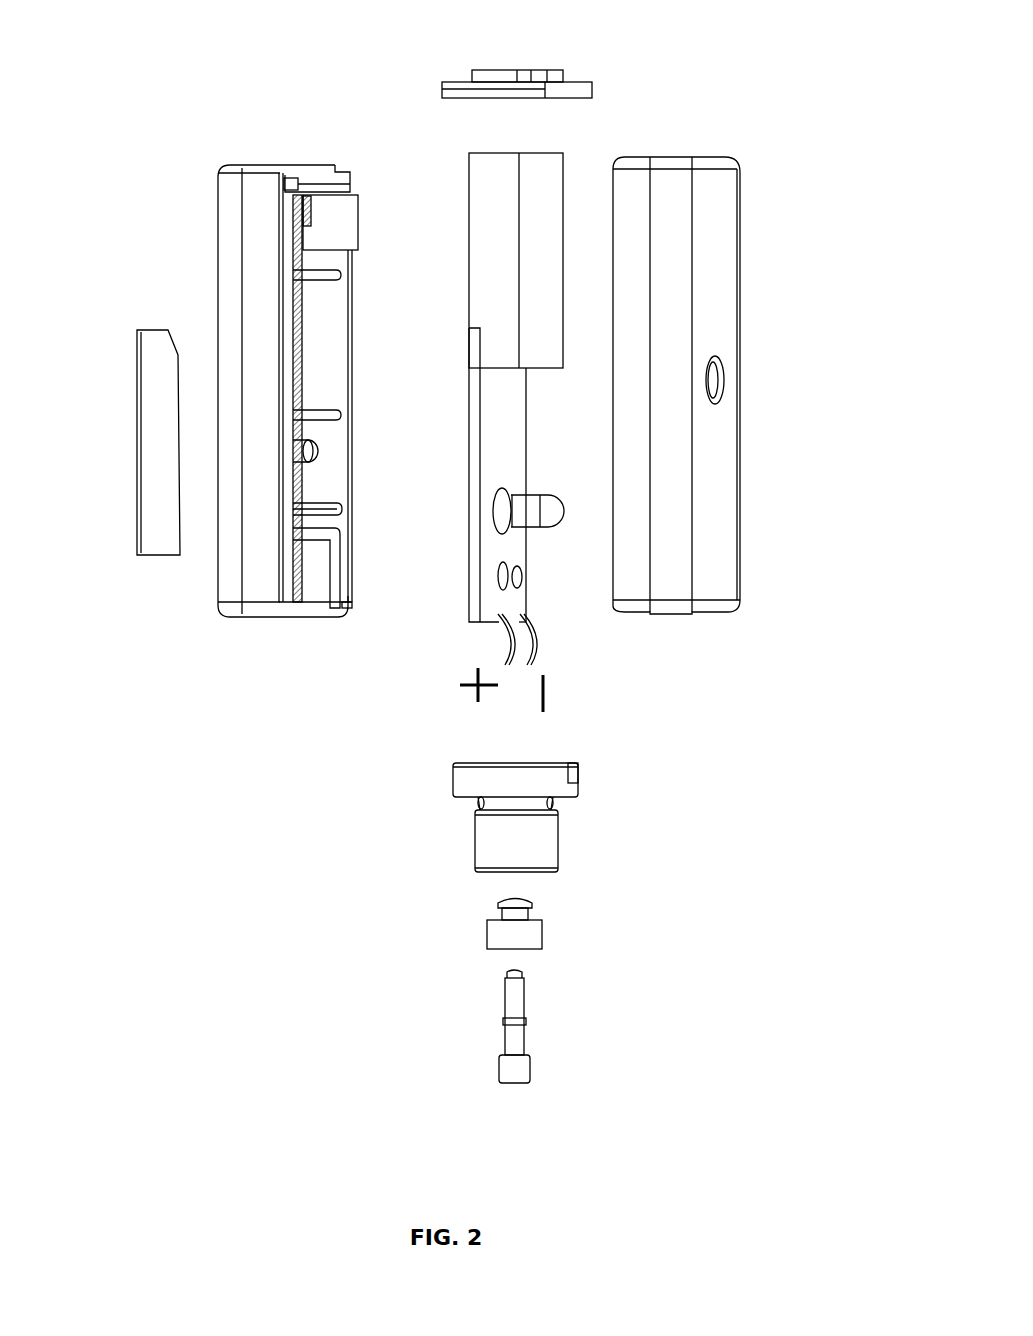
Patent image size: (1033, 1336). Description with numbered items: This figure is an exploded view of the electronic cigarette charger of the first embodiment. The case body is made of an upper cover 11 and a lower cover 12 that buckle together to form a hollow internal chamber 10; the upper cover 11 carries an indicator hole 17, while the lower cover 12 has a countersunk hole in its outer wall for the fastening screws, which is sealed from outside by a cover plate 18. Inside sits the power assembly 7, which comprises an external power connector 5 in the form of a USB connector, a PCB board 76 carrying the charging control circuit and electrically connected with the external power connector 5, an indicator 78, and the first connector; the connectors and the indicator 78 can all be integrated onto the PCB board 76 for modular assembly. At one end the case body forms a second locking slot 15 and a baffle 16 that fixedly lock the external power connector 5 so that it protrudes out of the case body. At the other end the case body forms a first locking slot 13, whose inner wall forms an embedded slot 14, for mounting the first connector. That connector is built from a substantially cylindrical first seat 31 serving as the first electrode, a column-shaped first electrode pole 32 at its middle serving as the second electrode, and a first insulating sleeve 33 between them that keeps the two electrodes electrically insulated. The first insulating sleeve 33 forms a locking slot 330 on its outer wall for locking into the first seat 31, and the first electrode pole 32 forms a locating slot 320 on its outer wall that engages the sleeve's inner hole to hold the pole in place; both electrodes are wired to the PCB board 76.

The external power connector 5 is at (484, 238).
The power assembly 7 is at (490, 440).
The internal chamber 10 is at (318, 340).
The upper cover 11 is at (712, 316).
The lower cover 12 is at (253, 272).
The first locking slot 13 is at (318, 568).
The embedded slot 14 is at (350, 506).
The second locking slot 15 is at (352, 188).
The baffle 16 is at (488, 80).
The indicator hole 17 is at (718, 380).
The cover plate 18 is at (160, 415).
The first seat 31 is at (530, 843).
The first electrode pole 32 is at (566, 1026).
The first insulating sleeve 33 is at (530, 941).
The PCB board 76 is at (490, 532).
The indicator 78 is at (534, 498).
The locating slot 320 is at (515, 1040).
The locking slot 330 is at (520, 915).